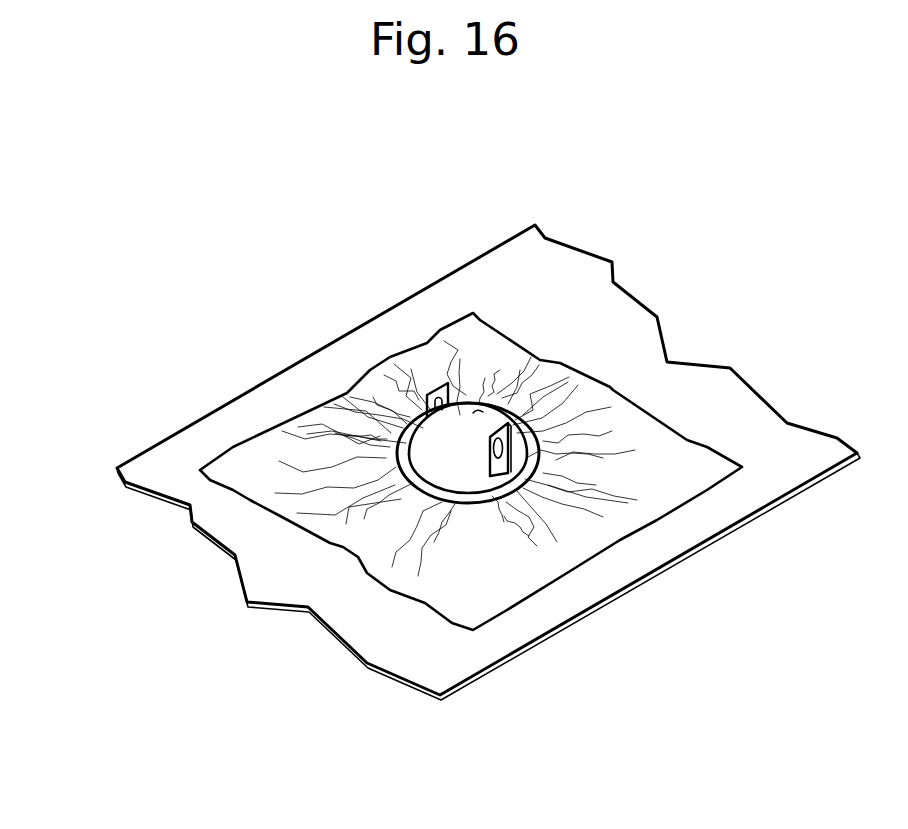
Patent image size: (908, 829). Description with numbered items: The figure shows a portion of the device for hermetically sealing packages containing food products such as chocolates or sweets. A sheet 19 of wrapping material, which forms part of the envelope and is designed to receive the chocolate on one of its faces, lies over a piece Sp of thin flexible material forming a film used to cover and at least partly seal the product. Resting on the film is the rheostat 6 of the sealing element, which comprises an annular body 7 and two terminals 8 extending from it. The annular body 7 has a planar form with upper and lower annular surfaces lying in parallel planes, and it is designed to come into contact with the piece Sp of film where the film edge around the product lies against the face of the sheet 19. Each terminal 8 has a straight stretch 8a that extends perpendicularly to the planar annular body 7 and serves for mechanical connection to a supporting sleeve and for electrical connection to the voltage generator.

The rheostat 6 is at (346, 524).
The annular body 7 is at (477, 592).
The terminals 8 is at (442, 304).
The straight stretch 8a is at (634, 541).
The sheet 19 is at (471, 505).
The piece of thin flexible material Sp is at (488, 454).